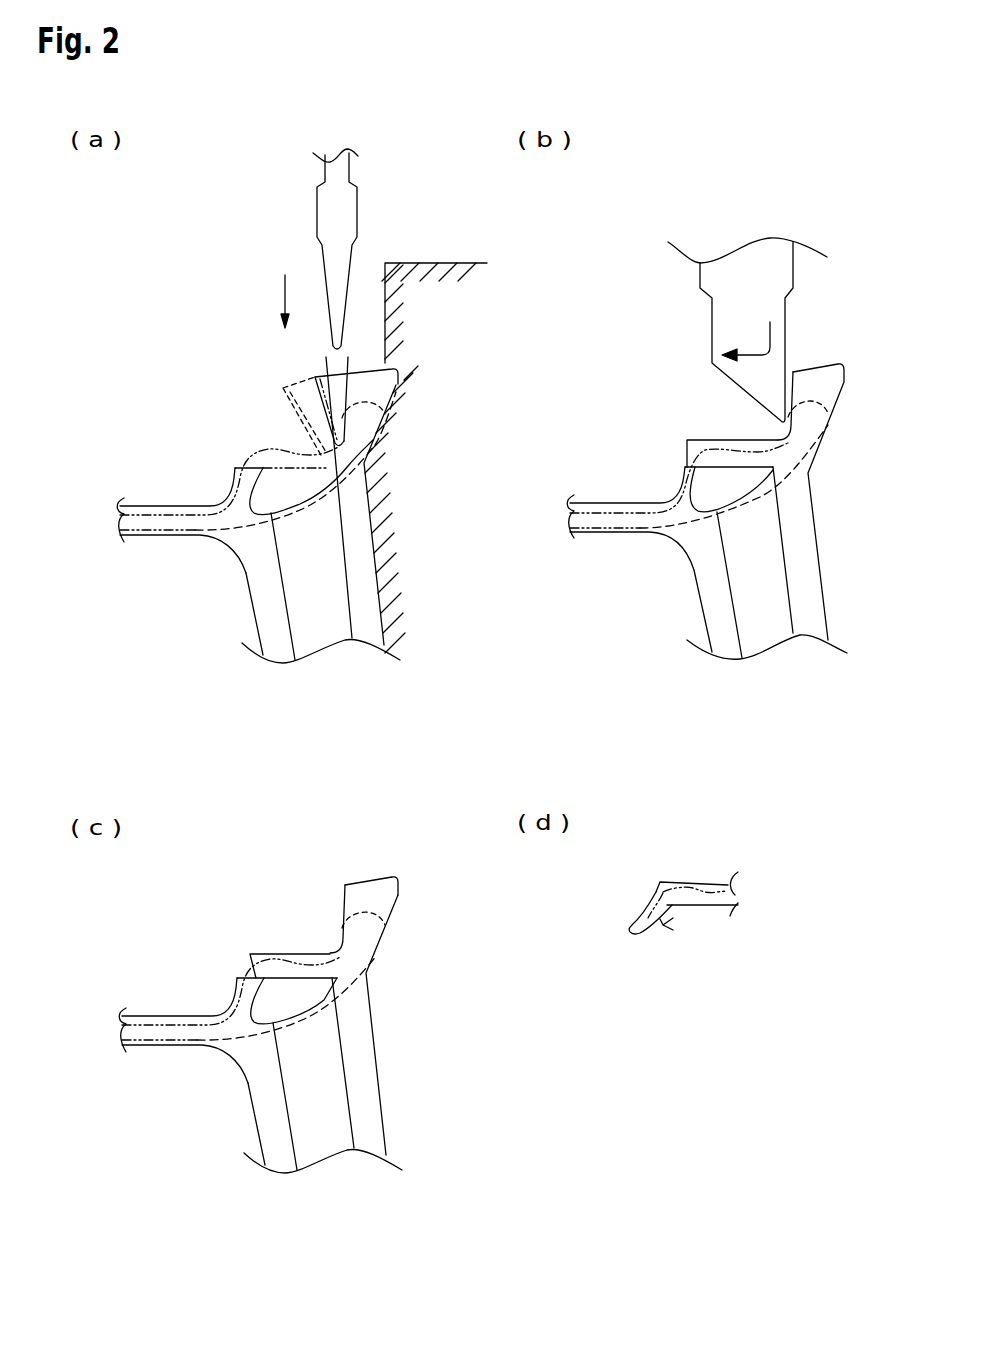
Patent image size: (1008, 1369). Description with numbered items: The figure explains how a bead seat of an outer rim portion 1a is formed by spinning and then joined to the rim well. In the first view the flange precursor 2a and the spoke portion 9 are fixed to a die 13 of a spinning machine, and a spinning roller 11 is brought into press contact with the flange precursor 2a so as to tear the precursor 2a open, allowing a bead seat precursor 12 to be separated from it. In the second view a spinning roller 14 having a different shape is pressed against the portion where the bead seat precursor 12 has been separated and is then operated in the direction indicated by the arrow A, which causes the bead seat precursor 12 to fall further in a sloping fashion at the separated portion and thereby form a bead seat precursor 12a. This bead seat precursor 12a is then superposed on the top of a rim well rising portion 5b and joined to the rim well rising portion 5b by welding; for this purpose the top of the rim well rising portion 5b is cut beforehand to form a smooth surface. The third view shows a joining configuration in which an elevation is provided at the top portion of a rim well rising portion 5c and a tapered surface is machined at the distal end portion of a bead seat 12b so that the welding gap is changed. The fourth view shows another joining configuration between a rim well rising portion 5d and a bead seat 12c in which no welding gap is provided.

The outer rim portion precursor 1a is at (290, 495).
The flange precursor 2a is at (383, 392).
The rim well rising portion 5b is at (666, 468).
The rim well rising portion 5c is at (240, 992).
The rim well rising portion 5d is at (654, 902).
The spoke portion 9 is at (357, 597).
The spinning roller 11 is at (340, 222).
The bead seat precursor 12 is at (303, 393).
The bead seat precursor 12a is at (694, 450).
The bead seat 12b is at (258, 952).
The bead seat 12c is at (708, 882).
The die 13 is at (458, 337).
The spinning roller 14 is at (777, 265).
The direction of roller operation A is at (746, 341).